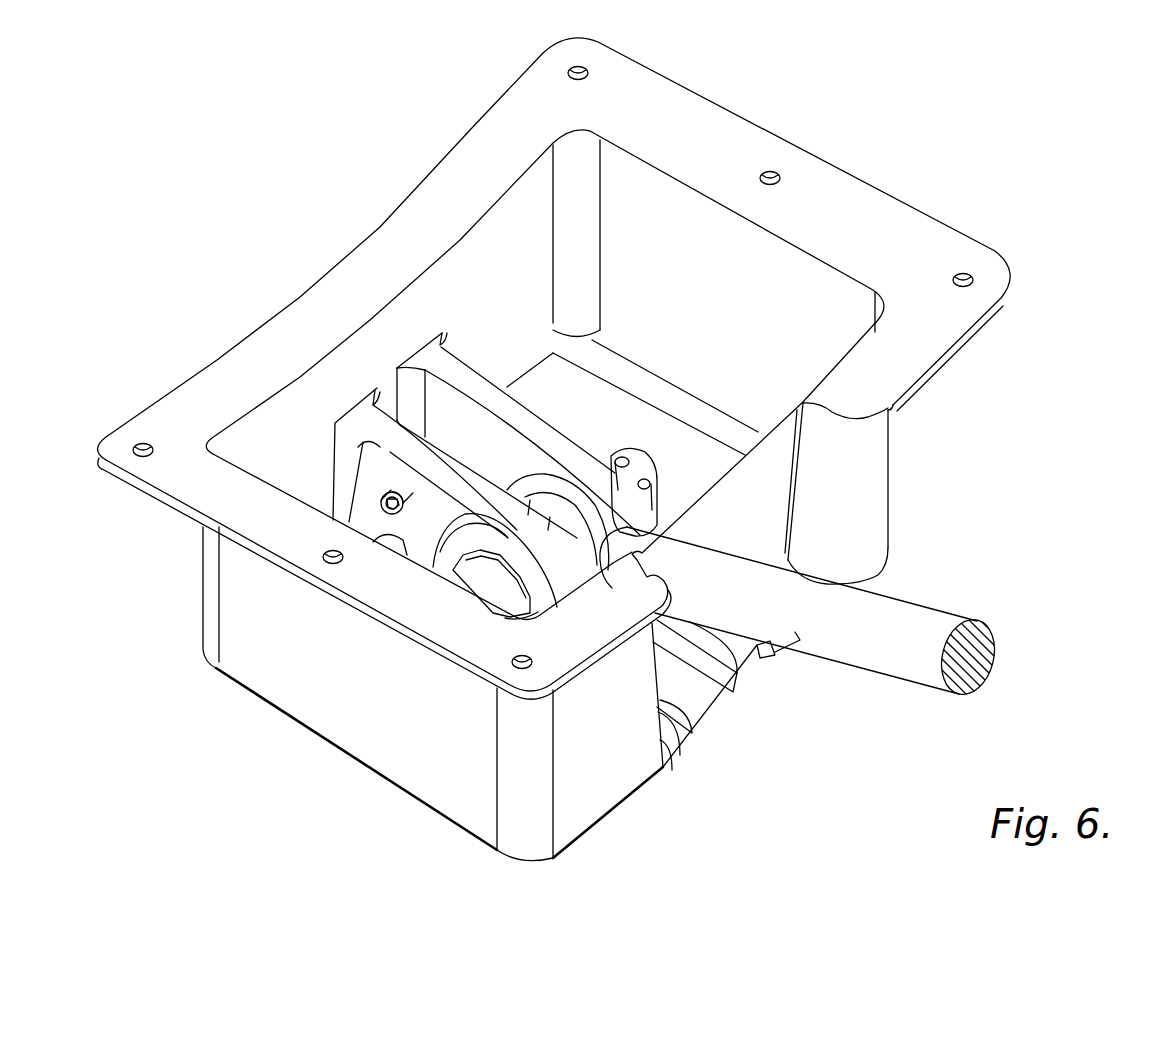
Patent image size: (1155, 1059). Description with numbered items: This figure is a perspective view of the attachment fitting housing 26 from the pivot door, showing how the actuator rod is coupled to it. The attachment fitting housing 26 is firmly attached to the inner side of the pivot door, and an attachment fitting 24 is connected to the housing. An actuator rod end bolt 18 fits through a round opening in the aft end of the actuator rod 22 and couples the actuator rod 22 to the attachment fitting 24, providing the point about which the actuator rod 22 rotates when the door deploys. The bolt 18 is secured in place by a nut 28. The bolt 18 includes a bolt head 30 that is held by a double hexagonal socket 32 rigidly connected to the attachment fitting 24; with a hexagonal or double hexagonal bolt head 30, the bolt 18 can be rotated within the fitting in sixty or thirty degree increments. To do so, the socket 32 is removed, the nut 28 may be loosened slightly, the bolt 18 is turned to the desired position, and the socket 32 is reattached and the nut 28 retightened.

The actuator rod end bolt 18 is at (503, 596).
The actuator rod 22 is at (913, 620).
The attachment fitting 24 is at (552, 440).
The attachment fitting housing 26 is at (928, 234).
The nut 28 is at (643, 478).
The bolt head 30 is at (484, 582).
The double hexagonal socket 32 is at (541, 592).